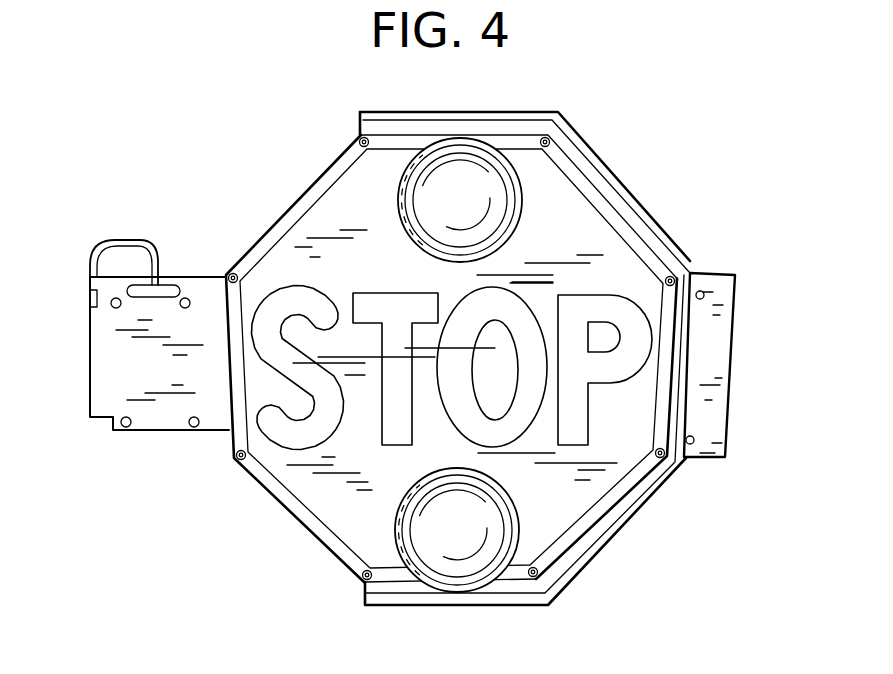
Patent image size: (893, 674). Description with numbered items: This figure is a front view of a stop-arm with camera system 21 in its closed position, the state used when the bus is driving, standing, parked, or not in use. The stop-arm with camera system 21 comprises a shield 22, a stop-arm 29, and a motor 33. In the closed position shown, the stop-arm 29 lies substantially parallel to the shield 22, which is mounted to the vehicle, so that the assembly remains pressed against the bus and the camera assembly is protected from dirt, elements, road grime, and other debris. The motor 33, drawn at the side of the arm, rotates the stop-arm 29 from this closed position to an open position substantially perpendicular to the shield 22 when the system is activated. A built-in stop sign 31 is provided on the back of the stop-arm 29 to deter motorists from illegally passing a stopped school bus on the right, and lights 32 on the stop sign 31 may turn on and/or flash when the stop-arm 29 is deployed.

The stop-arm with camera system 21 is at (477, 351).
The shield 22 is at (613, 536).
The stop-arm 29 is at (228, 308).
The stop sign 31 is at (335, 492).
The lights 32 is at (487, 162).
The motor 33 is at (105, 342).